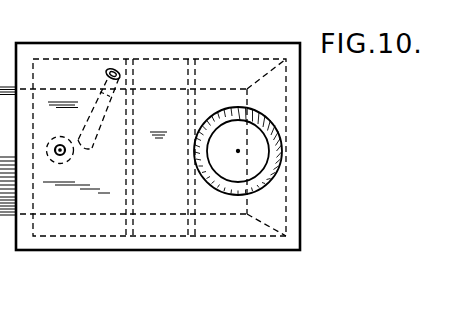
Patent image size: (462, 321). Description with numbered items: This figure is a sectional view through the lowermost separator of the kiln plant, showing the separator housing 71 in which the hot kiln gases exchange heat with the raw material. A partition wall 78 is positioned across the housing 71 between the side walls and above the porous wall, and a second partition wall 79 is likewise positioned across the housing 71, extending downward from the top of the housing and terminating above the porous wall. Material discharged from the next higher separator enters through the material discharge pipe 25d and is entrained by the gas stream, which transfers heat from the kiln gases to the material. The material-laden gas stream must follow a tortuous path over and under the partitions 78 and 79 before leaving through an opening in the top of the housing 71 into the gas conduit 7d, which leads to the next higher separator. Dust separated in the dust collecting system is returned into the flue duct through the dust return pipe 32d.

The housing 71 is at (200, 47).
The partition wall 78 is at (125, 220).
The second partition wall 79 is at (187, 220).
The gas conduit 7d is at (284, 150).
The material discharge pipe 25d is at (74, 123).
The dust return pipe 32d is at (113, 69).